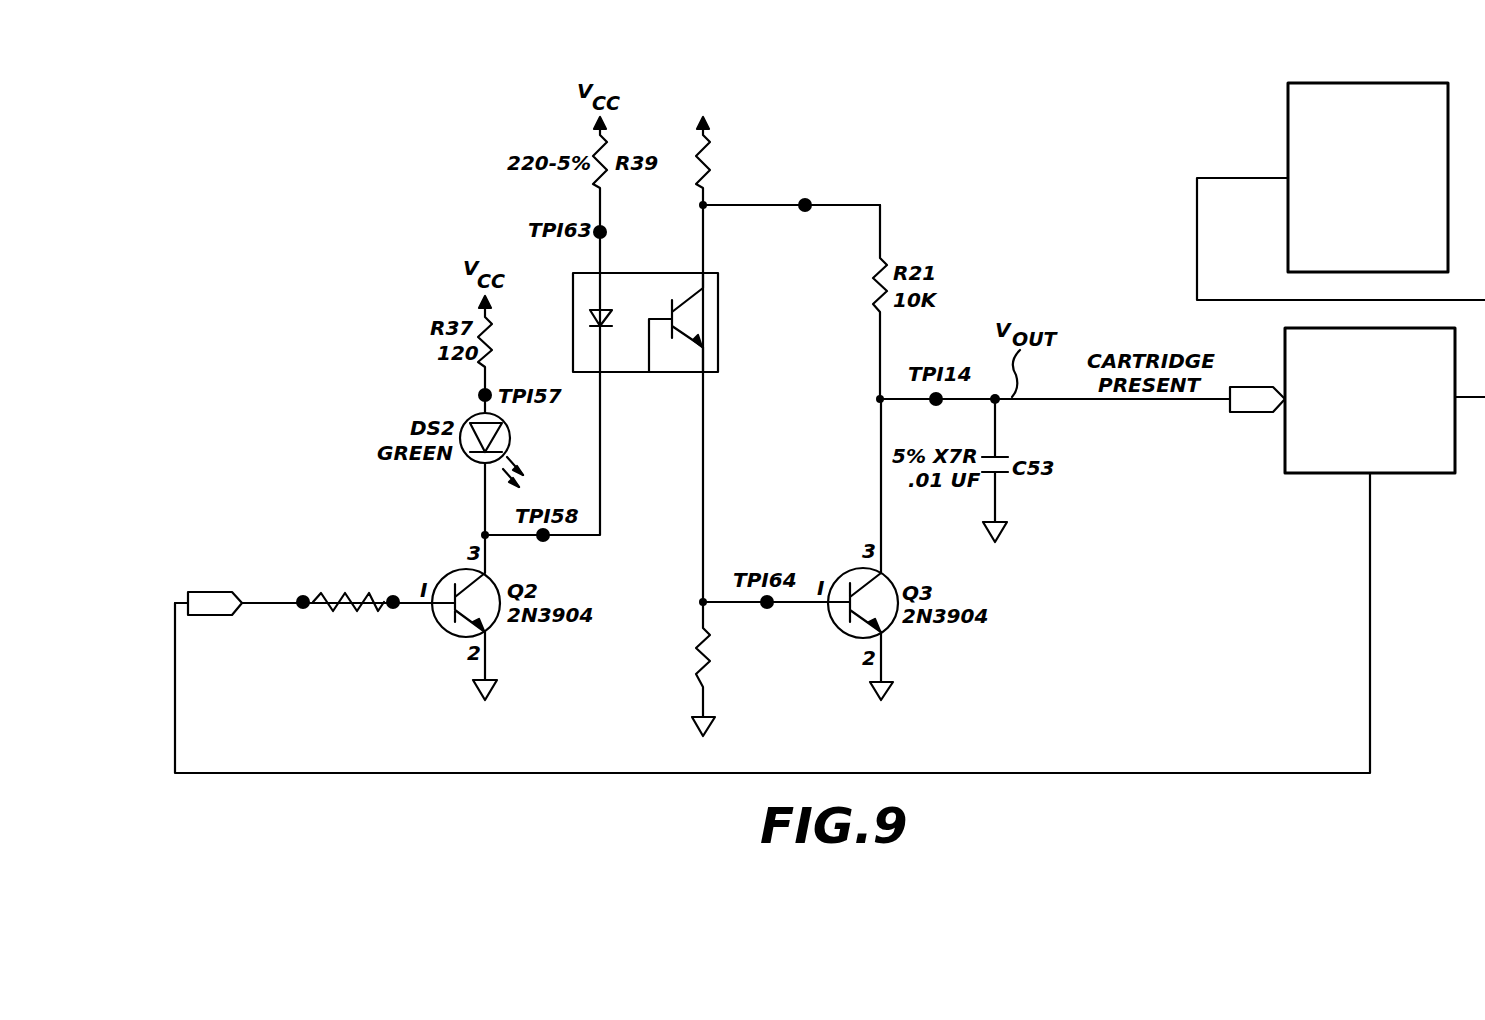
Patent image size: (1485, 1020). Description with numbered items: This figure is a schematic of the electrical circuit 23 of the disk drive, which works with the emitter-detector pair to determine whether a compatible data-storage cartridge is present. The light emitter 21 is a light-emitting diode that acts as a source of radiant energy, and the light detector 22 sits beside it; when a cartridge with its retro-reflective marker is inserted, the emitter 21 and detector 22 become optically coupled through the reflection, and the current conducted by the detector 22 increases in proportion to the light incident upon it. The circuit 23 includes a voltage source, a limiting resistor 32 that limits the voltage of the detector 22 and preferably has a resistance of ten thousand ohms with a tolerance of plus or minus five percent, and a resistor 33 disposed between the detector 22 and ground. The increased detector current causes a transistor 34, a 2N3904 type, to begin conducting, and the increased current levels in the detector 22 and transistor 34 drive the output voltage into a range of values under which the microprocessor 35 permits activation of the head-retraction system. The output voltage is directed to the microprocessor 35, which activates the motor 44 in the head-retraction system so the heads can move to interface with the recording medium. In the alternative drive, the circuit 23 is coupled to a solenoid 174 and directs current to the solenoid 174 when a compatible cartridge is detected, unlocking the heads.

The light emitter 21 is at (592, 313).
The light detector 22 is at (674, 317).
The electrical circuit 23 is at (915, 117).
The limiting resistor 32 is at (750, 142).
The resistor 33 is at (740, 684).
The transistor 34 is at (693, 343).
The microprocessor 35 is at (1370, 400).
The motor 44 is at (1368, 177).
The solenoid 174 is at (1341, 239).